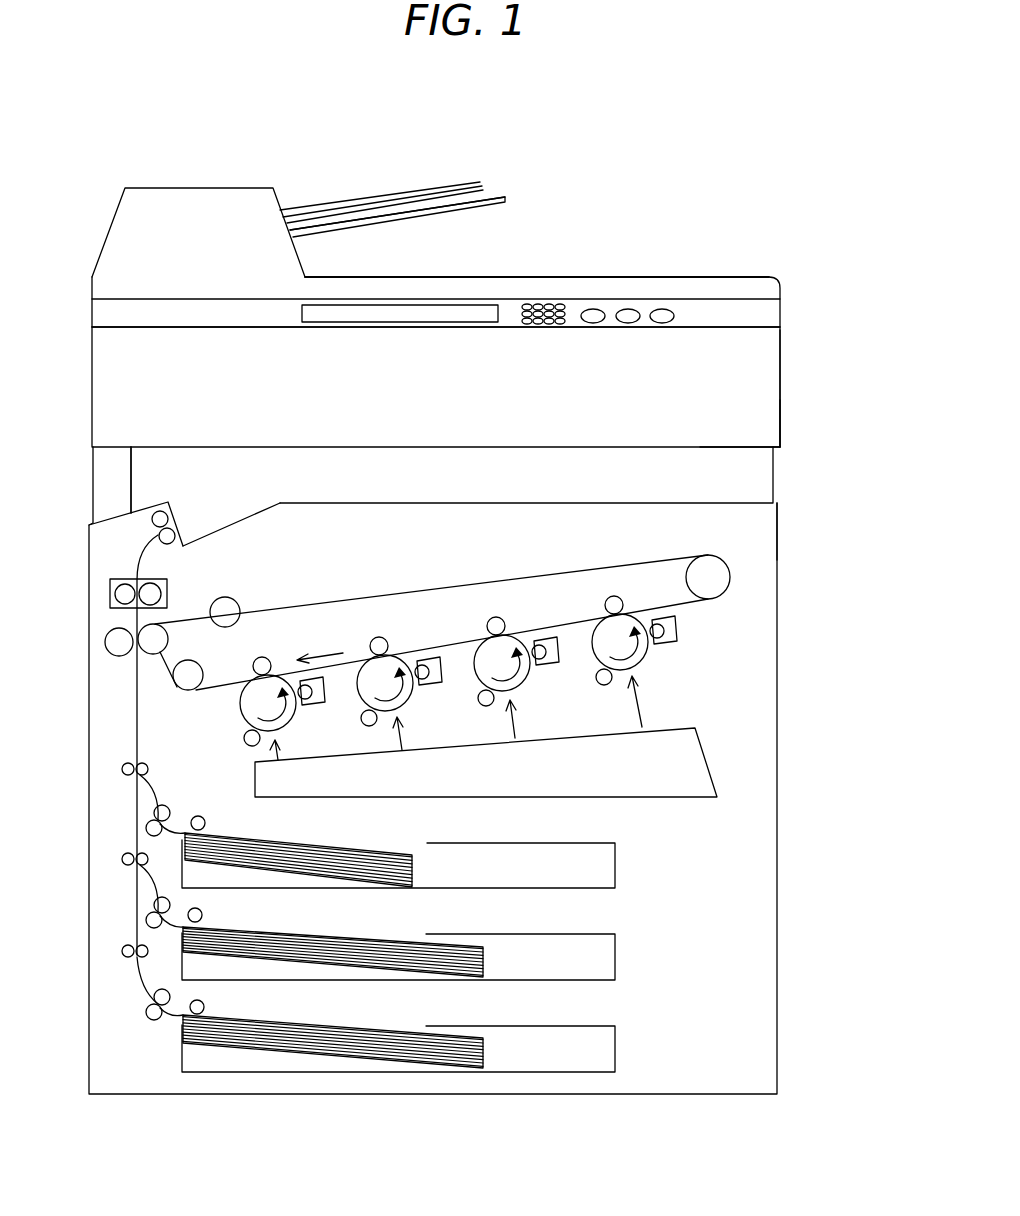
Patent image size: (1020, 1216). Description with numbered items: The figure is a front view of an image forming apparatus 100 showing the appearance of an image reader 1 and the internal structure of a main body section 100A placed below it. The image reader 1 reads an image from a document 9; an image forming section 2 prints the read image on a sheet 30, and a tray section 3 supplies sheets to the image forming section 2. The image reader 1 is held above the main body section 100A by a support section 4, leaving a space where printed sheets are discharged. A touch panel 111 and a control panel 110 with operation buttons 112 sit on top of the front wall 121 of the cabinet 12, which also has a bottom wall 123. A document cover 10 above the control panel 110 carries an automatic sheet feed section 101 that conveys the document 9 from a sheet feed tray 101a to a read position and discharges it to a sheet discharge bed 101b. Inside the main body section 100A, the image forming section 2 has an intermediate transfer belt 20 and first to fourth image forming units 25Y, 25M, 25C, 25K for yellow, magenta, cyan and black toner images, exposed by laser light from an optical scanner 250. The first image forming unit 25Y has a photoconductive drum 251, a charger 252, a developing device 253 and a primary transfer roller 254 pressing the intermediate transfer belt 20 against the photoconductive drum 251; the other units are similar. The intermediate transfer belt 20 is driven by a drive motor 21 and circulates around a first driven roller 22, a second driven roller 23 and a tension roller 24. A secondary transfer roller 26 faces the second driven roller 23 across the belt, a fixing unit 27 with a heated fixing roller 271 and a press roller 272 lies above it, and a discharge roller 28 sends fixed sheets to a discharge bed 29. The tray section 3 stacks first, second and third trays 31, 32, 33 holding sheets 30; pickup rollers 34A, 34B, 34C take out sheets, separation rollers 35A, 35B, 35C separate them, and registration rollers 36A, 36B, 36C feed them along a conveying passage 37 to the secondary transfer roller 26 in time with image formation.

The image forming apparatus 100 is at (745, 151).
The image reader 1 is at (782, 204).
The automatic sheet feed section 101 is at (222, 188).
The document 9 is at (370, 192).
The sheet feed tray 101a is at (498, 190).
The sheet discharge bed 101b is at (560, 277).
The touch panel 111 is at (393, 307).
The operation keys 112 is at (658, 310).
The document cover 10 is at (735, 290).
The control panel 110 is at (770, 317).
The cabinet 12 is at (780, 372).
The front wall 121 is at (772, 430).
The bottom wall 123 is at (727, 447).
The main body section 100A is at (780, 526).
The image forming section 2 is at (765, 580).
The tray section 3 is at (752, 870).
The support section 4 is at (112, 490).
The discharge roller 28 is at (163, 513).
The discharge bed 29 is at (243, 518).
The conveying passage 37 is at (133, 702).
The fixing unit 27 is at (110, 593).
The fixing roller 271 is at (120, 590).
The press roller 272 is at (152, 590).
The secondary transfer roller 26 is at (118, 642).
The second driven roller 23 is at (158, 635).
The tension roller 24 is at (226, 610).
The first driven roller 22 is at (190, 674).
The drive motor 21 is at (707, 577).
The intermediate transfer belt 20 is at (400, 605).
The fourth image forming unit 25K is at (267, 640).
The third image forming unit 25C is at (378, 622).
The second image forming unit 25M is at (491, 602).
The first image forming unit 25Y is at (642, 627).
The photoconductive drum 251 is at (605, 628).
The charger 252 is at (600, 683).
The developing device 253 is at (670, 640).
The primary transfer roller 254 is at (622, 608).
The optical scanner 250 is at (707, 763).
The registration roller 36A is at (125, 765).
The separation roller 35A is at (178, 805).
The pickup roller 34A is at (205, 822).
The sheet 30 is at (350, 860).
The first tray 31 is at (615, 858).
The registration roller 36B is at (125, 855).
The separation roller 35B is at (163, 899).
The pickup roller 34B is at (203, 914).
The second tray 32 is at (615, 950).
The registration roller 36C is at (125, 947).
The separation roller 35C is at (162, 992).
The pickup roller 34C is at (205, 1006).
The third tray 33 is at (615, 1043).